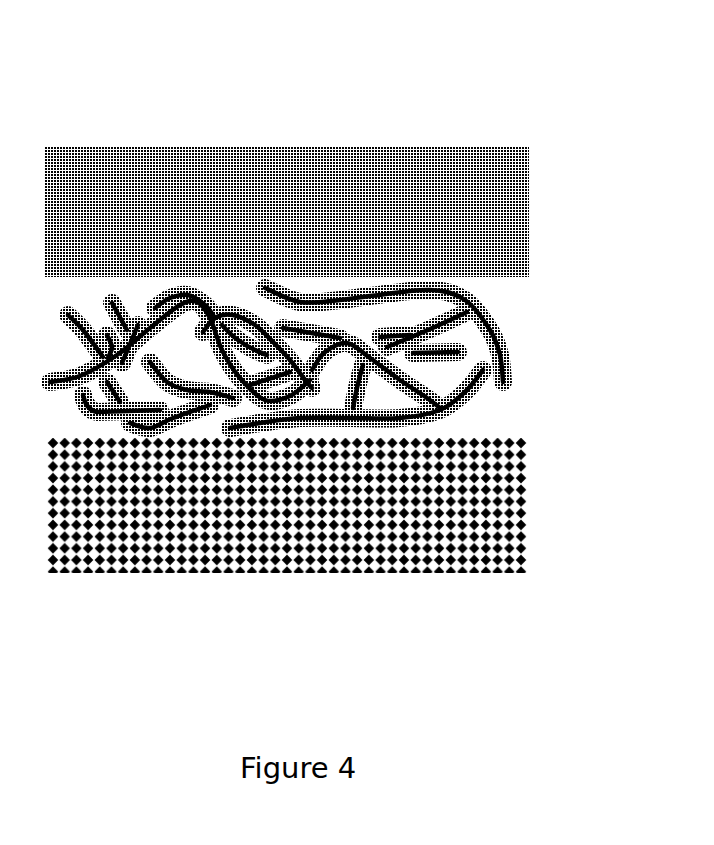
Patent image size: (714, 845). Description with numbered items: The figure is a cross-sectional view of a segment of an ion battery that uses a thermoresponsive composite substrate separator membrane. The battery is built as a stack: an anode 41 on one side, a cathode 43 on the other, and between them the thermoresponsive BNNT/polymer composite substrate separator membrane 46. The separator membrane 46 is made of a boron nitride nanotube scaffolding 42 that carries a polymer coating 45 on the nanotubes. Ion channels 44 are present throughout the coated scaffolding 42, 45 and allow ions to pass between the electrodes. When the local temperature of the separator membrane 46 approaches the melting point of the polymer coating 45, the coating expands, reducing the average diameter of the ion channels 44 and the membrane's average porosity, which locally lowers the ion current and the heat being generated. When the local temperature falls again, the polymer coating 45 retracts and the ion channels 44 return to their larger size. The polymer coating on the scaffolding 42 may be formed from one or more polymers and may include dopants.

The anode 41 is at (407, 227).
The boron nitride nanotube scaffolding 42 is at (193, 295).
The cathode 43 is at (445, 375).
The ion channels 44 is at (360, 315).
The polymer coating 45 is at (206, 295).
The thermoresponsive BNNT/polymer composite substrate separator membrane 46 is at (527, 333).